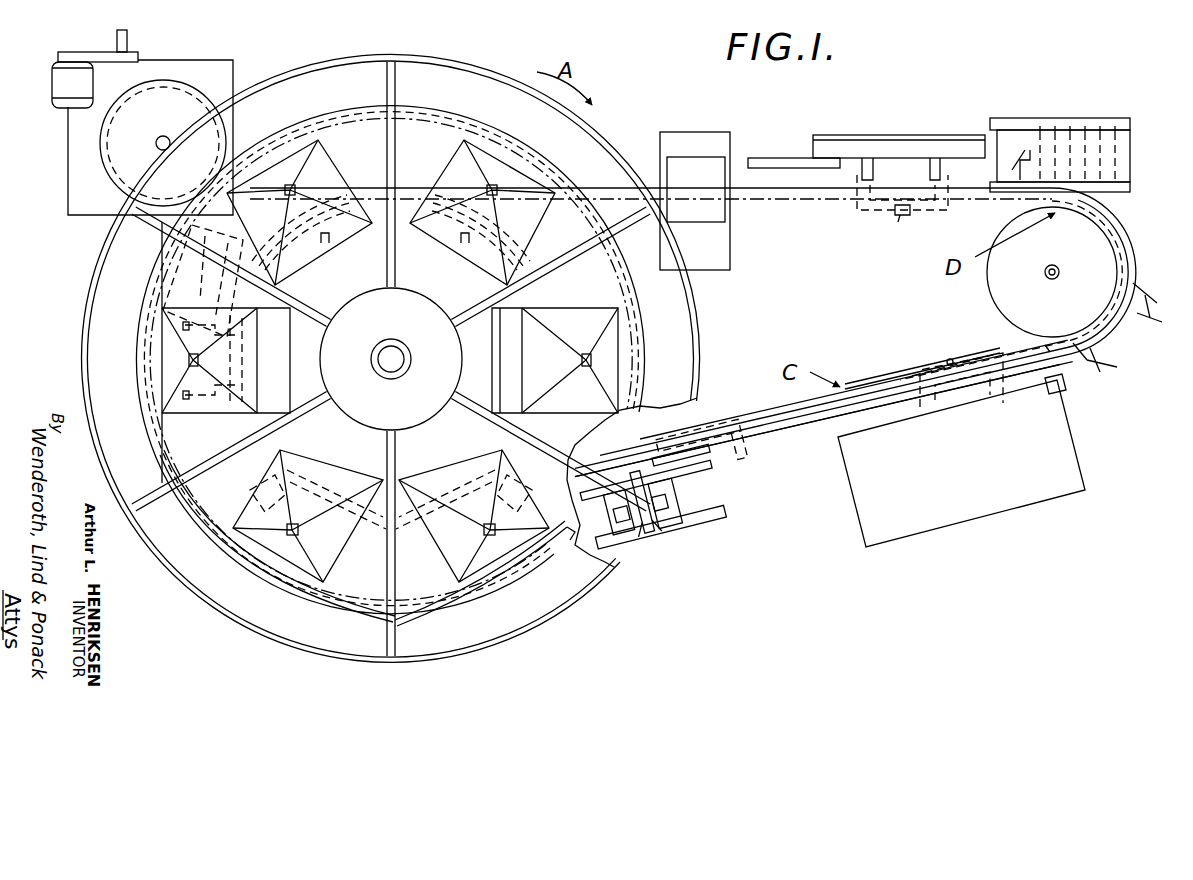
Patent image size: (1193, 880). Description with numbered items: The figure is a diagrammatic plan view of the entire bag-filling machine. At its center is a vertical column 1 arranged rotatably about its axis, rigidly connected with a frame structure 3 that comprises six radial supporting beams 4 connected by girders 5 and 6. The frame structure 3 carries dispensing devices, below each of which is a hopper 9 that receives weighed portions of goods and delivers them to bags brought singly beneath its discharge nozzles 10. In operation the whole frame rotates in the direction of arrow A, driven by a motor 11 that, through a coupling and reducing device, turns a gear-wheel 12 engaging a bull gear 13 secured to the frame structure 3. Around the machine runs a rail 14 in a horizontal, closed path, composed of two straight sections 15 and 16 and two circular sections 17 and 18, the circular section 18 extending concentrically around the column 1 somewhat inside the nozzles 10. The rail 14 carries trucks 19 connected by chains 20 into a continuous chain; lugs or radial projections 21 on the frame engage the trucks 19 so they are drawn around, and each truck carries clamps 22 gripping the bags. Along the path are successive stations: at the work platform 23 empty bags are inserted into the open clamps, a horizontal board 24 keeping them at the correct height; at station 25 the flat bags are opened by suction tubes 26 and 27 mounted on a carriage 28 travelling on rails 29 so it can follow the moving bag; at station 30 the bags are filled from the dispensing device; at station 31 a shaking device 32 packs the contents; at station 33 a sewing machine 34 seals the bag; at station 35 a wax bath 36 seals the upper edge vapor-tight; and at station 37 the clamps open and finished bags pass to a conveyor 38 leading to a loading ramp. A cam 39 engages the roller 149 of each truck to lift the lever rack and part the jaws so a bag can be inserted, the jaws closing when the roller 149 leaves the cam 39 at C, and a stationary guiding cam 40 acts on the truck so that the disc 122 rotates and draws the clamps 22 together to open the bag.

The vertical column 1 is at (440, 370).
The frame structure 3 is at (547, 621).
The radial supporting beams 4 is at (357, 447).
The girder 5 is at (207, 523).
The girder 6 is at (302, 430).
The hopper 9 is at (333, 564).
The discharge nozzles 10 is at (325, 525).
The motor 11 is at (78, 80).
The gear-wheel 12 is at (165, 80).
The bull gear 13 is at (318, 117).
The rail 14 is at (758, 438).
The straight section 15 is at (800, 422).
The straight section 16 is at (662, 192).
The circular section 17 is at (1120, 218).
The circular section 18 is at (235, 433).
The trucks 19 is at (880, 210).
The chains 20 is at (963, 205).
The lugs or radial projections 21 is at (243, 350).
The clamps 22 is at (1117, 360).
The station or work platform 23 is at (1070, 455).
The horizontal board 24 is at (1060, 388).
The station for opening the bags 25 is at (630, 548).
The suction tube 26 is at (643, 517).
The suction tube 27 is at (628, 490).
The carriage 28 is at (672, 502).
The rails 29 is at (712, 470).
The station for filling the bags 30 is at (549, 552).
The station for shaking the bags 31 is at (147, 305).
The shaking device 32 is at (180, 283).
The station for sealing the bags 33 is at (675, 132).
The sewing machine 34 is at (713, 157).
The station for vapor-tight sealing 35 is at (810, 150).
The wax bath 36 is at (905, 135).
The station 37 is at (1023, 117).
The conveyor 38 is at (1072, 140).
The cam 39 is at (1107, 250).
The stationary guiding cam 40 is at (668, 445).
The disc 122 is at (945, 365).
The roller 149 is at (953, 360).